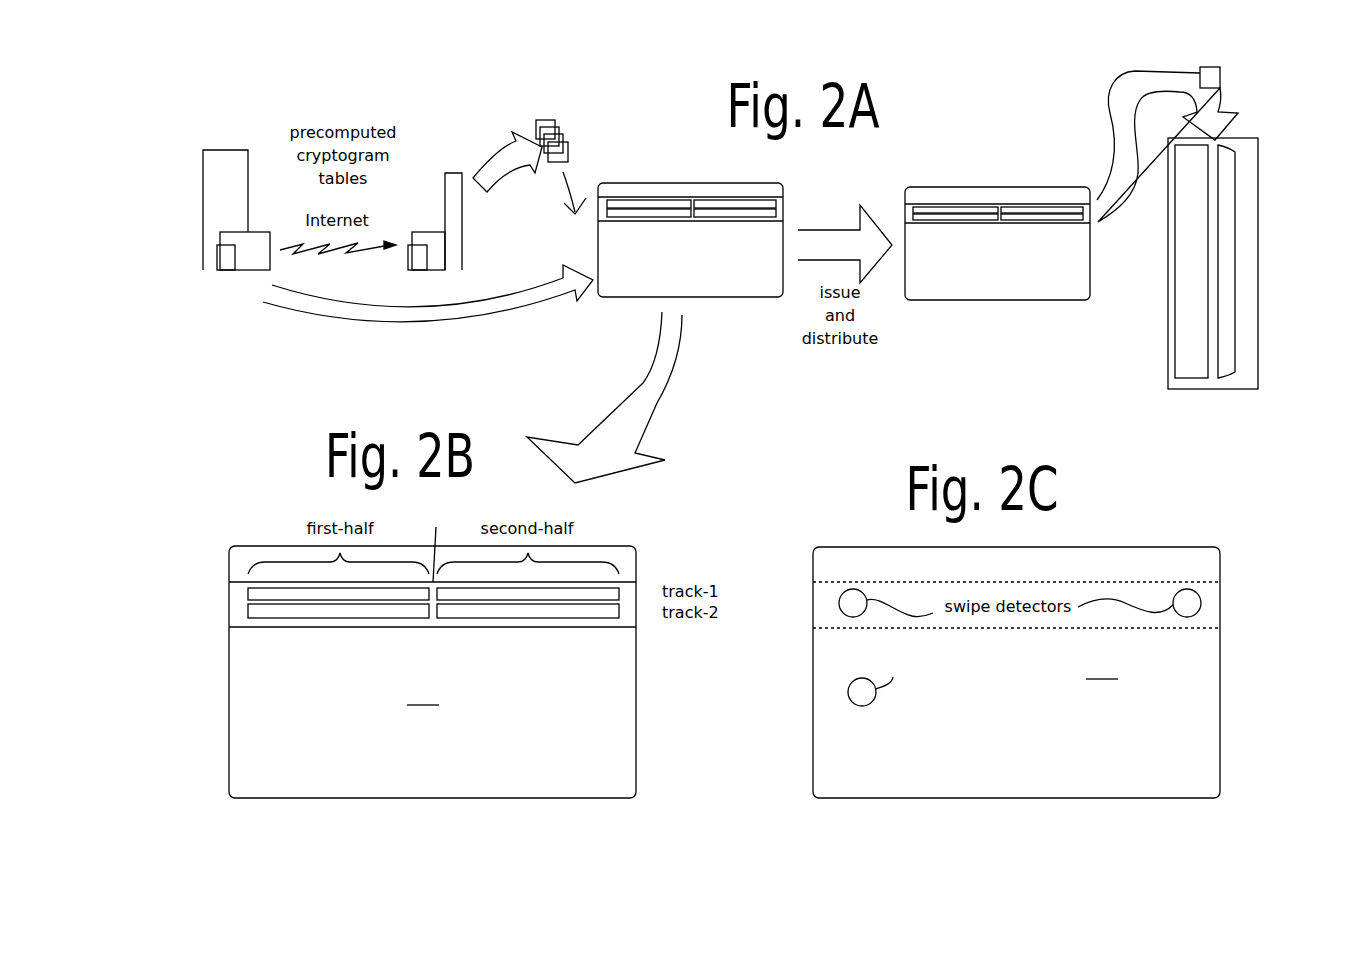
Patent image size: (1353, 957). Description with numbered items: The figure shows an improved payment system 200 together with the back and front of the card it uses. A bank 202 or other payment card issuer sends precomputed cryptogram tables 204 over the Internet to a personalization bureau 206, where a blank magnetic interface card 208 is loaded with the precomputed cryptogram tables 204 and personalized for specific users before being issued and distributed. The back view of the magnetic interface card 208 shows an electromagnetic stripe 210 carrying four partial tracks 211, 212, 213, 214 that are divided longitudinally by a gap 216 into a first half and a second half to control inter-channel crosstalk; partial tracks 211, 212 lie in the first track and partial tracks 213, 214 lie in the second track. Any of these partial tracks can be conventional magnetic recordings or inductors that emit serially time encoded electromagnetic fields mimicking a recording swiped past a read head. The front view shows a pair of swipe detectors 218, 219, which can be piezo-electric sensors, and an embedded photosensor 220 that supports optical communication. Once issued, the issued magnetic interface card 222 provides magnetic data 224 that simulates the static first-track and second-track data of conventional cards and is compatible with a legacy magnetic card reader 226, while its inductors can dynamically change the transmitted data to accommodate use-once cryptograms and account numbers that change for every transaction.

In FIG. 2A, the payment system 200 is at (378, 68).
In FIG. 2A, the bank 202 is at (205, 150).
In FIG. 2A, the precomputed cryptogram tables 204 is at (543, 116).
In FIG. 2A, the personalization bureau 206 is at (430, 232).
In FIG. 2A, the magnetic interface card 208 is at (692, 183).
In FIG. 2B, the magnetic interface card 208 is at (432, 695).
In FIG. 2C, the magnetic interface card 208 is at (1016, 696).
In FIG. 2B, the electromagnetic stripe 210 is at (229, 622).
In FIG. 2B, the partial track 211 is at (267, 594).
In FIG. 2B, the partial track 212 is at (495, 594).
In FIG. 2B, the partial track 213 is at (308, 611).
In FIG. 2B, the partial track 214 is at (547, 611).
In FIG. 2B, the gap 216 is at (434, 609).
In FIG. 2C, the swipe detector 218 is at (885, 588).
In FIG. 2C, the swipe detector 219 is at (1139, 588).
In FIG. 2C, the photosensor 220 is at (888, 696).
In FIG. 2A, the issued magnetic interface card 222 is at (940, 187).
In FIG. 2A, the magnetic data 224 is at (1212, 63).
In FIG. 2A, the legacy magnetic card reader 226 is at (1167, 309).